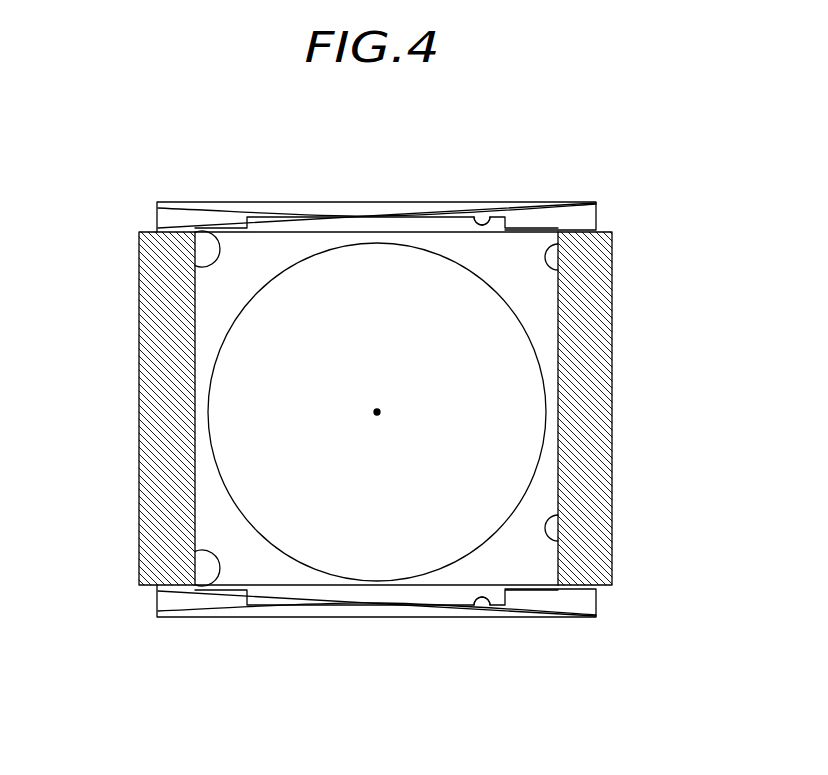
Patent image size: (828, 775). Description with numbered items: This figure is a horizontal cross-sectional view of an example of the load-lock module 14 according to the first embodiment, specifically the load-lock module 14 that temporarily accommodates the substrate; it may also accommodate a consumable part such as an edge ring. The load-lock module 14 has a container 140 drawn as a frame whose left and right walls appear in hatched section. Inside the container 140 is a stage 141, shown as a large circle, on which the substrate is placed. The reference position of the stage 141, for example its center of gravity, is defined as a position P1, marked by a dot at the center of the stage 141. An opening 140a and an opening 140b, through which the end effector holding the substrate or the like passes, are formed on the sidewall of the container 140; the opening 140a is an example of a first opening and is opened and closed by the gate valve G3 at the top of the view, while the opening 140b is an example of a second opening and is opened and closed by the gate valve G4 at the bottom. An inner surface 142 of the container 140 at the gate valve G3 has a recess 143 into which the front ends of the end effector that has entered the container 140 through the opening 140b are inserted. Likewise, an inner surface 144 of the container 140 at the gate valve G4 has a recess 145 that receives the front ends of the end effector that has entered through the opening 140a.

The load-lock module 14 is at (615, 308).
The container 140 is at (615, 338).
The opening 140a is at (552, 257).
The opening 140b is at (549, 524).
The stage 141 is at (541, 370).
The inner surface 142 is at (205, 266).
The recess 143 is at (494, 215).
The inner surface 144 is at (205, 570).
The recess 145 is at (483, 597).
The gate valve G3 is at (280, 203).
The gate valve G4 is at (378, 618).
The position P1 is at (380, 412).